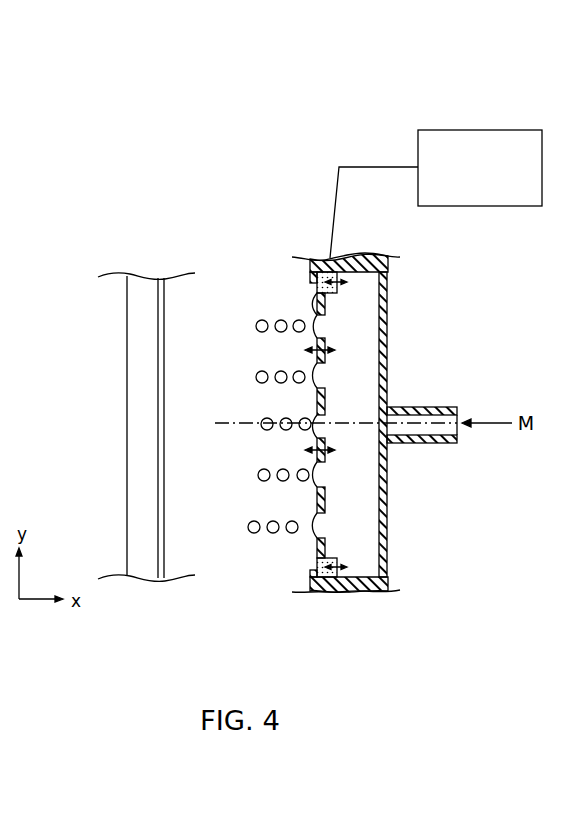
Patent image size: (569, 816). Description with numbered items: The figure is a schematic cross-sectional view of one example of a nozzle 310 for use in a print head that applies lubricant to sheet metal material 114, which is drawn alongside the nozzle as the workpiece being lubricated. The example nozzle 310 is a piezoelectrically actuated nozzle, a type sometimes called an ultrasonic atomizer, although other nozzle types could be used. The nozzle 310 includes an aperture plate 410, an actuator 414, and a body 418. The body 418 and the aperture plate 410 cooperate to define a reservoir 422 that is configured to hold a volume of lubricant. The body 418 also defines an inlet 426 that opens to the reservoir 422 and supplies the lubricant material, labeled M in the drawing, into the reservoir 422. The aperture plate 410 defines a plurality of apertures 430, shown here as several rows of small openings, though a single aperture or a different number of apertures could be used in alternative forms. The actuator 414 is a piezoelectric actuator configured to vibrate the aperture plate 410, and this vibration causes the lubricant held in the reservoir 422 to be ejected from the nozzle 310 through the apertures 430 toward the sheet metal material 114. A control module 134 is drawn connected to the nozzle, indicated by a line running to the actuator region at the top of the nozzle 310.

The sheet metal material 114 is at (135, 375).
The control module 134 is at (498, 130).
The nozzle 310 is at (279, 581).
The aperture plate 410 is at (317, 550).
The actuator 414 is at (337, 558).
The body 418 is at (387, 517).
The reservoir 422 is at (370, 312).
The inlet 426 is at (445, 410).
The apertures 430 is at (320, 377).